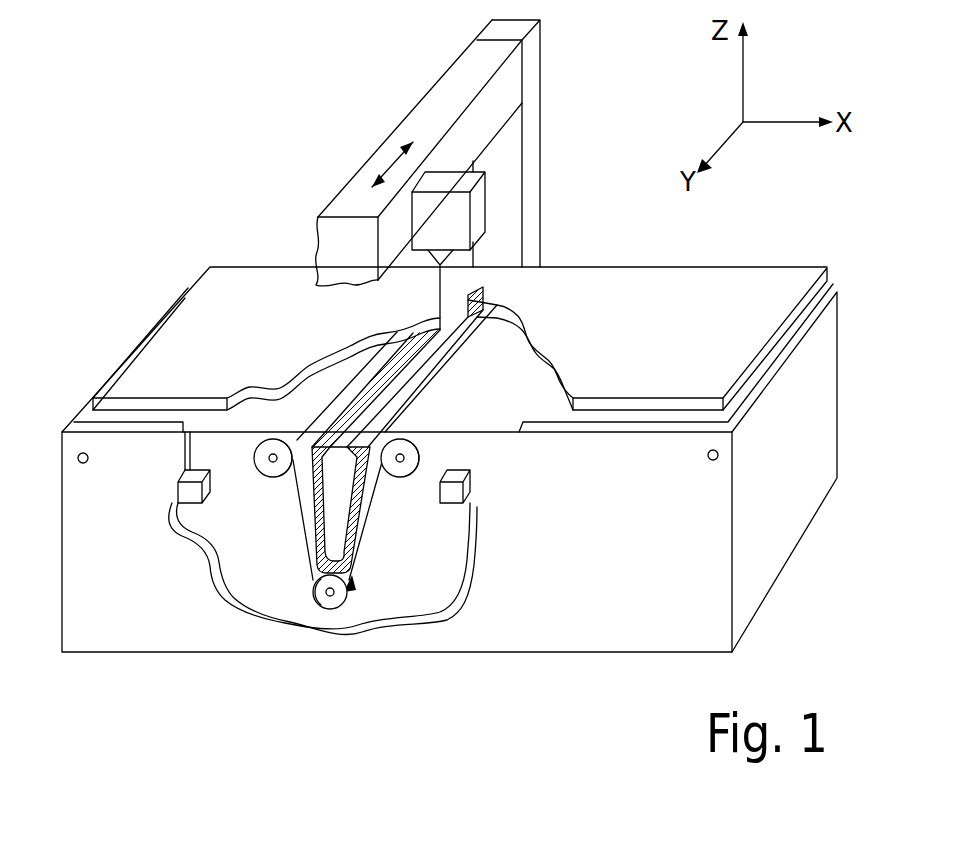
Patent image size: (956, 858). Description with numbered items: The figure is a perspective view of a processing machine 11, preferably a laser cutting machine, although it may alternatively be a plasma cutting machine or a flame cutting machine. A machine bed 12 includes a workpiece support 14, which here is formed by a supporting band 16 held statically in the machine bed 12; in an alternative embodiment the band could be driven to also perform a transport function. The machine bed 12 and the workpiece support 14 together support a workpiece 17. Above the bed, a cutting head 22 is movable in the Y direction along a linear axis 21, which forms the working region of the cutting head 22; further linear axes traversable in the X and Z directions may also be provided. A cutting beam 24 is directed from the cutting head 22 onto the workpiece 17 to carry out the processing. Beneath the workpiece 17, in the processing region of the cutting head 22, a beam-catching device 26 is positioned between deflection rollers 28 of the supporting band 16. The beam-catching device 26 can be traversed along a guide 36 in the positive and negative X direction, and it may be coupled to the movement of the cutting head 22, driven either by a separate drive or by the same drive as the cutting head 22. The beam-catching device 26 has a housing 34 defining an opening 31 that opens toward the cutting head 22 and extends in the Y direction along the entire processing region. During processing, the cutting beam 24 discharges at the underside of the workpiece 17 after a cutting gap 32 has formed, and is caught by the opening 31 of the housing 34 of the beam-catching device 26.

The processing machine 11 is at (573, 672).
The machine bed 12 is at (765, 557).
The workpiece support 14 is at (210, 452).
The supporting band 16 is at (205, 422).
The workpiece 17 is at (757, 300).
The linear axis 21 is at (443, 100).
The cutting head 22 is at (440, 215).
The cutting beam 24 is at (437, 287).
The beam-catching device 26 is at (351, 592).
The deflection rollers 28 is at (273, 477).
The opening 31 is at (372, 415).
The cutting gap 32 is at (488, 268).
The housing 34 is at (313, 543).
The guide 36 is at (188, 495).